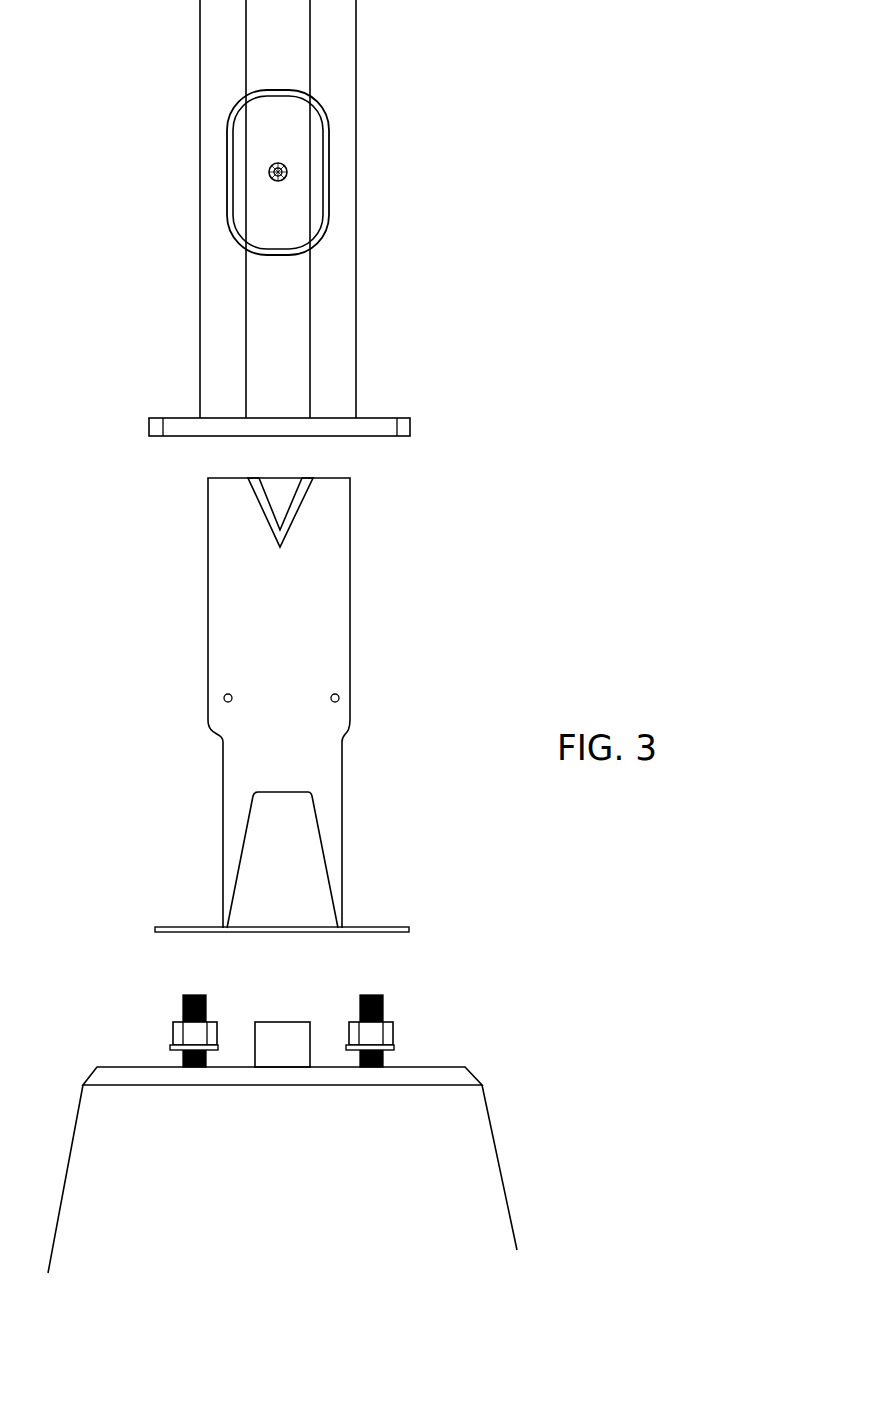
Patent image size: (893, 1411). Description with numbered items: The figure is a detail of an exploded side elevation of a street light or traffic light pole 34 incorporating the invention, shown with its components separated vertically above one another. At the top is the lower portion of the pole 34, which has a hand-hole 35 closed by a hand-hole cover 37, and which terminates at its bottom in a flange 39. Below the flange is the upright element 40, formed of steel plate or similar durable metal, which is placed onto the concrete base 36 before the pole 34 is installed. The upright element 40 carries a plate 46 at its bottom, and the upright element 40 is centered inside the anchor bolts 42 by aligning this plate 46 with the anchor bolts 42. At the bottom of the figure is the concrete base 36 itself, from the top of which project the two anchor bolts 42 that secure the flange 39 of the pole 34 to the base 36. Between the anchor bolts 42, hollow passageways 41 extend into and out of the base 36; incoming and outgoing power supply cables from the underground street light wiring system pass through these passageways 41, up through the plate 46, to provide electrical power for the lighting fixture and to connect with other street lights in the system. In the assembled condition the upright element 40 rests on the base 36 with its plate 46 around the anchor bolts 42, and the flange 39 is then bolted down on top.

The street light or traffic light pole 34 is at (350, 33).
The hand-hole 35 is at (330, 140).
The hand-hole cover 37 is at (295, 202).
The flange 39 is at (388, 416).
The upright element 40 is at (338, 608).
The plate 46 is at (400, 923).
The concrete base 36 is at (477, 1130).
The anchor bolts 42 is at (170, 1013).
The passageways 41 is at (255, 1042).